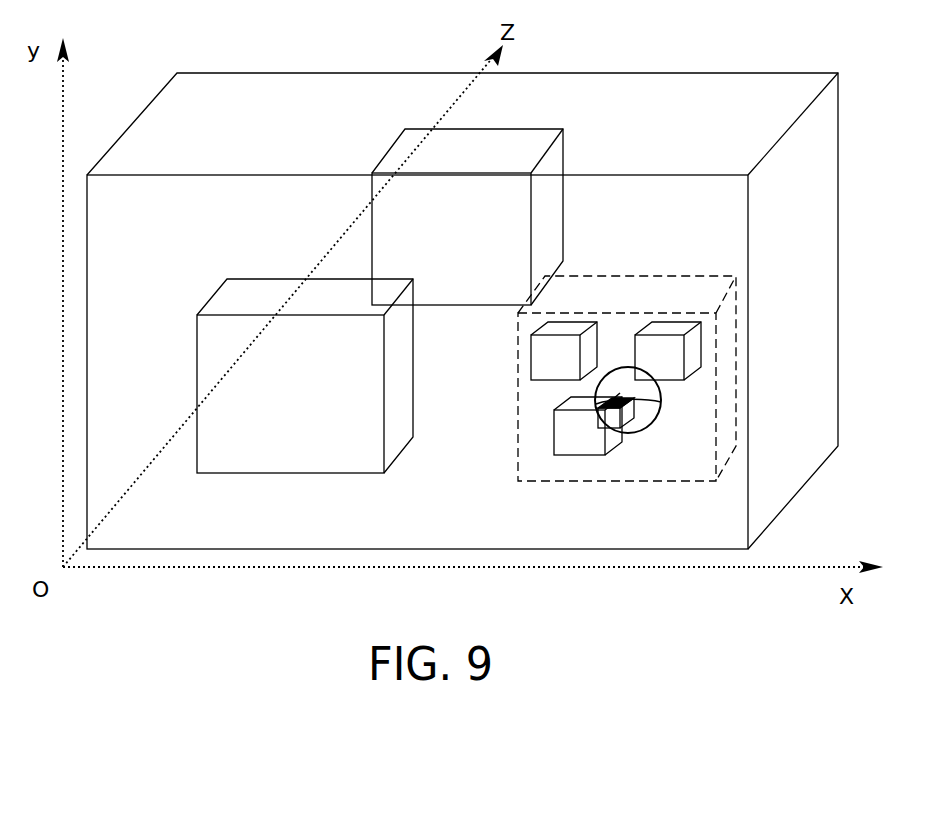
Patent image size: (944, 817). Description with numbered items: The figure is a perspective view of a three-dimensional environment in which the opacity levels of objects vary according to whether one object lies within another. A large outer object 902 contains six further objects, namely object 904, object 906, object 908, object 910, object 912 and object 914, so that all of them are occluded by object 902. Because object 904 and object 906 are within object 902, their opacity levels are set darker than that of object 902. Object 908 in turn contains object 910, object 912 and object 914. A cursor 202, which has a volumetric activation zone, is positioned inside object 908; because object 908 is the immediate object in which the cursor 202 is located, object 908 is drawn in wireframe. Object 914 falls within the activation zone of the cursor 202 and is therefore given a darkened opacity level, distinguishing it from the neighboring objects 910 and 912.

The object 902 is at (257, 73).
The object 904 is at (300, 474).
The object 906 is at (516, 128).
The object 908 is at (588, 483).
The object 910 is at (570, 368).
The object 912 is at (674, 368).
The object 914 is at (593, 444).
The cursor 202 is at (661, 392).